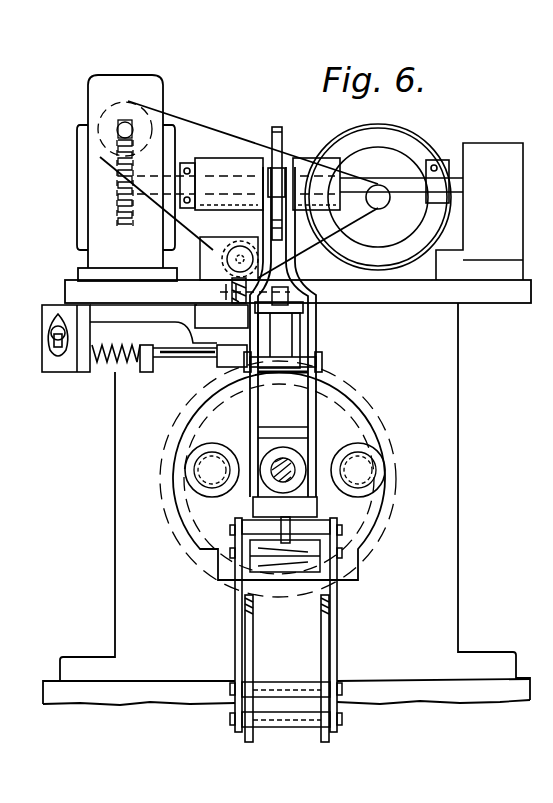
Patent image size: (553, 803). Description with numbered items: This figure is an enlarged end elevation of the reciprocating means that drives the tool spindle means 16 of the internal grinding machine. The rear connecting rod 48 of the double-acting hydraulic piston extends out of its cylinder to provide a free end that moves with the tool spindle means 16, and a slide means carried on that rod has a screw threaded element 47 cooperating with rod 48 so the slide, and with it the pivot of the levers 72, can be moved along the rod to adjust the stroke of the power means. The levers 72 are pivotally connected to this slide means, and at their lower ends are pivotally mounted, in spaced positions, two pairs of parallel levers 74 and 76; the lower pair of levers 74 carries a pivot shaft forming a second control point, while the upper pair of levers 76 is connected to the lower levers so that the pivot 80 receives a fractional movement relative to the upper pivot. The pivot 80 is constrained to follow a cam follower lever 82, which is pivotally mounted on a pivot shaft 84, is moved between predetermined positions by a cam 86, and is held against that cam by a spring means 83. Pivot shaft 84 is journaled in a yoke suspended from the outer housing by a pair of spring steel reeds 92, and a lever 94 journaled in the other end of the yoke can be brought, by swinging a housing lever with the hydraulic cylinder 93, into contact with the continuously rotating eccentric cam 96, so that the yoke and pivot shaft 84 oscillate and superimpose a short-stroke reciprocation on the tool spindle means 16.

The tool spindle means 16 is at (115, 538).
The screw threaded element 47 is at (9, 492).
The rear connecting rod 48 is at (283, 458).
The levers 72 is at (321, 623).
The lower pair of levers 74 is at (238, 729).
The upper pair of levers 76 is at (240, 617).
The pivot 80 is at (307, 539).
The cam follower lever 82 is at (316, 425).
The spring means 83 is at (253, 240).
The pivot shaft 84 is at (313, 362).
The cam 86 is at (280, 127).
The spring steel members or reeds 92 is at (286, 343).
The hydraulic cylinder 93 is at (42, 368).
The lever 94 is at (300, 299).
The eccentric cam 96 is at (298, 276).